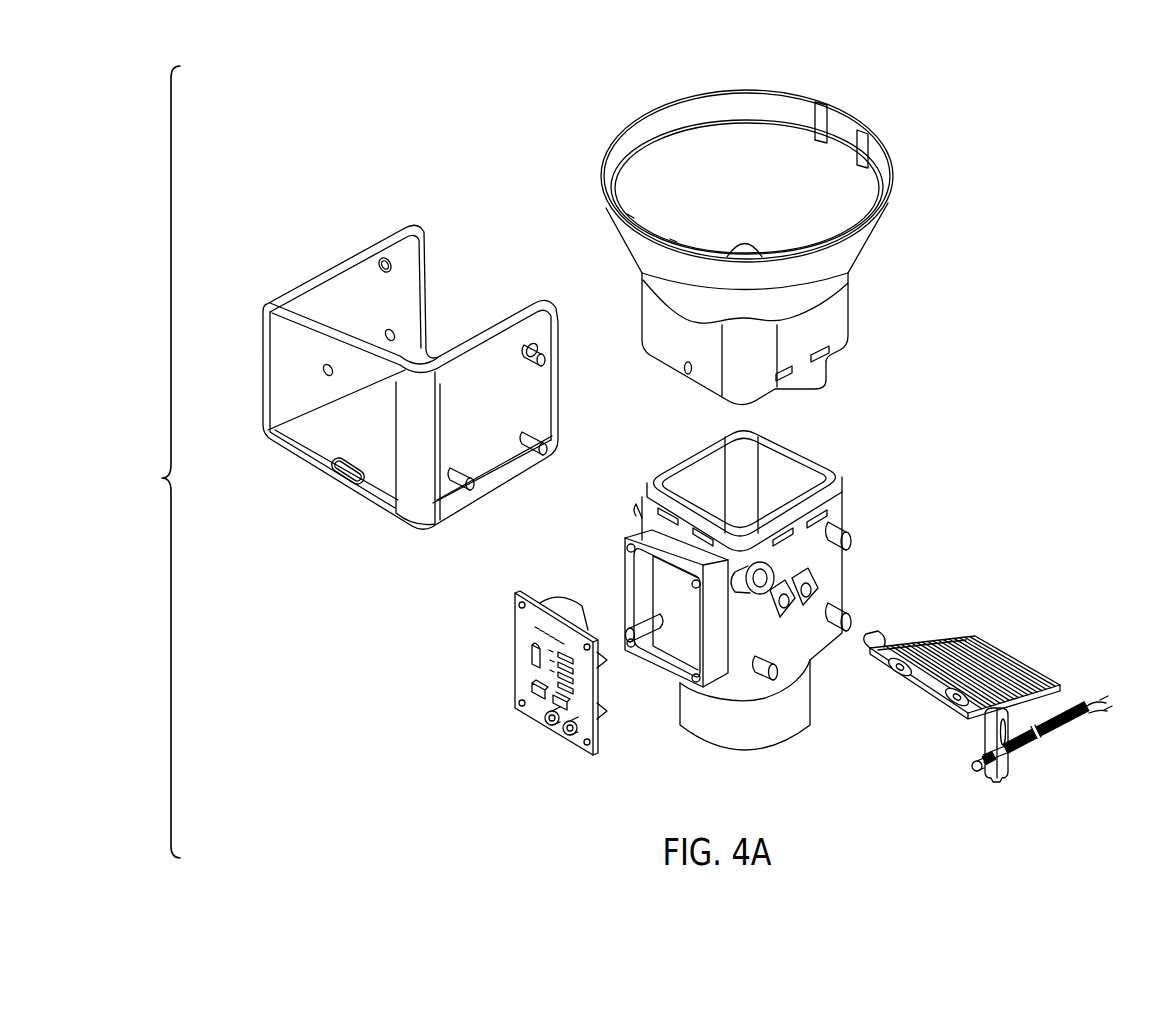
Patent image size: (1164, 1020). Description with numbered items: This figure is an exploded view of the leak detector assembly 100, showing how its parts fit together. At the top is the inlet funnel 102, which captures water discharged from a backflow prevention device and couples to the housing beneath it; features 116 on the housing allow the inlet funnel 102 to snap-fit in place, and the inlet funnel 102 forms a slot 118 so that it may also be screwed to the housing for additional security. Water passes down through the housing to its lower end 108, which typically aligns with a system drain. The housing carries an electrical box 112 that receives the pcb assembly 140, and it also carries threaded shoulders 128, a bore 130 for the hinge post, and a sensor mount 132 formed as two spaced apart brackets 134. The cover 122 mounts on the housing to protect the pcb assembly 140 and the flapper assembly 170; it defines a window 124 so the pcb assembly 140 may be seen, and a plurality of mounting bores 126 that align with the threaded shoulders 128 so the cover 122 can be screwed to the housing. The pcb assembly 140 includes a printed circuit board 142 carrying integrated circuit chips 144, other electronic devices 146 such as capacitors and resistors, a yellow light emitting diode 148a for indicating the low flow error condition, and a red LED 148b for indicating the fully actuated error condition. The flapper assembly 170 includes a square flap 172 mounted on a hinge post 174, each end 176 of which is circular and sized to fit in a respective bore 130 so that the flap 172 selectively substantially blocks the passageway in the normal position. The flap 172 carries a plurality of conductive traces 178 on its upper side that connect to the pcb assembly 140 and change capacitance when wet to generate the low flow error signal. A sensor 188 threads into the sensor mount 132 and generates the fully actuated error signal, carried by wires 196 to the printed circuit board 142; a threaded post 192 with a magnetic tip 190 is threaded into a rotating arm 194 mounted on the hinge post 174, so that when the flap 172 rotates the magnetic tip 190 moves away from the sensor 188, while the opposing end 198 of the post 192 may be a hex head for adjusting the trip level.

The leak detector assembly 100 is at (1027, 192).
The inlet funnel 102 is at (668, 170).
The lower end 108 is at (745, 752).
The electrical box 112 is at (668, 650).
The features 116 is at (784, 372).
The slot 118 is at (688, 375).
The cover 122 is at (296, 312).
The window 124 is at (347, 480).
The mounting bores 126 is at (383, 258).
The threaded shoulders 128 is at (842, 530).
The bore 130 is at (762, 574).
The sensor mount 132 is at (812, 586).
The brackets 134 is at (790, 608).
The pcb assembly 140 is at (500, 600).
The printed circuit board 142 is at (512, 638).
The integrated circuit chips 144 is at (533, 656).
The other electronic devices 146 is at (535, 689).
The yellow light emitting diode 148a is at (569, 735).
The red LED 148b is at (551, 724).
The flapper assembly 170 is at (899, 698).
The flap 172 is at (1000, 668).
The hinge post 174 is at (890, 650).
The end 176 is at (871, 640).
The conductive traces 178 is at (1010, 662).
The sensor 188 is at (1068, 769).
The magnetic tip 190 is at (1036, 746).
The threaded post 192 is at (975, 772).
The arm 194 is at (988, 745).
The wires 196 is at (1109, 702).
The opposing end 198 is at (978, 766).